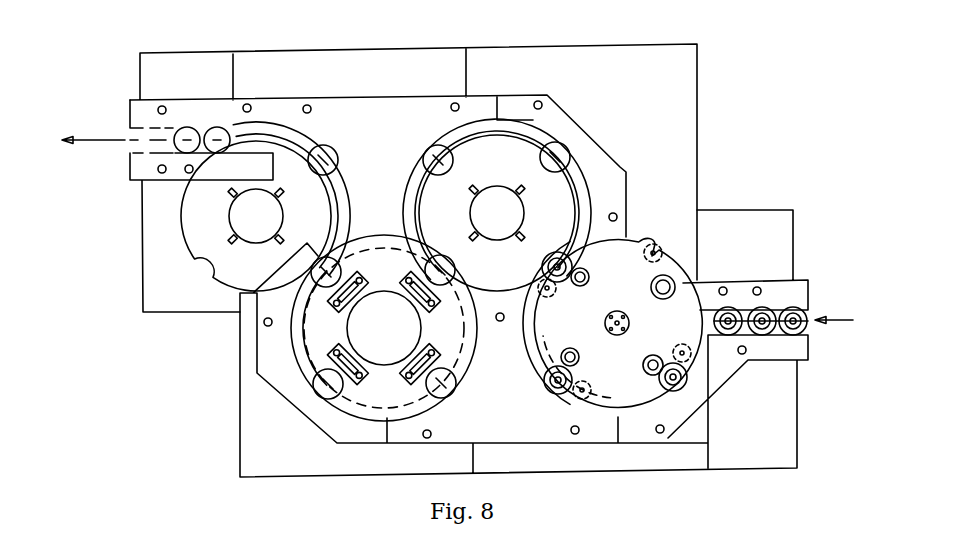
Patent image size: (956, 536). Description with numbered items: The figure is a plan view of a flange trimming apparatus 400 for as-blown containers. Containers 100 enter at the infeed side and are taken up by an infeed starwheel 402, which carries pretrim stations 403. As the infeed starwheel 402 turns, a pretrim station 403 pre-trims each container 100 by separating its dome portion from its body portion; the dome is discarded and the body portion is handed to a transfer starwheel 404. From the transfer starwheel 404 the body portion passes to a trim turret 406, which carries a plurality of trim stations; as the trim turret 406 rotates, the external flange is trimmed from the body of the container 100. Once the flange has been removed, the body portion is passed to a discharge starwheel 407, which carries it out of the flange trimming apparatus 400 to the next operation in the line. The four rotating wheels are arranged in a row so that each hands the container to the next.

The flange trimming apparatus 400 is at (165, 457).
The infeed starwheel 402 is at (643, 233).
The pretrim station 403 is at (660, 280).
The transfer starwheel 404 is at (530, 127).
The trim turret 406 is at (315, 343).
The discharge starwheel 407 is at (220, 285).
The container 100 is at (807, 318).